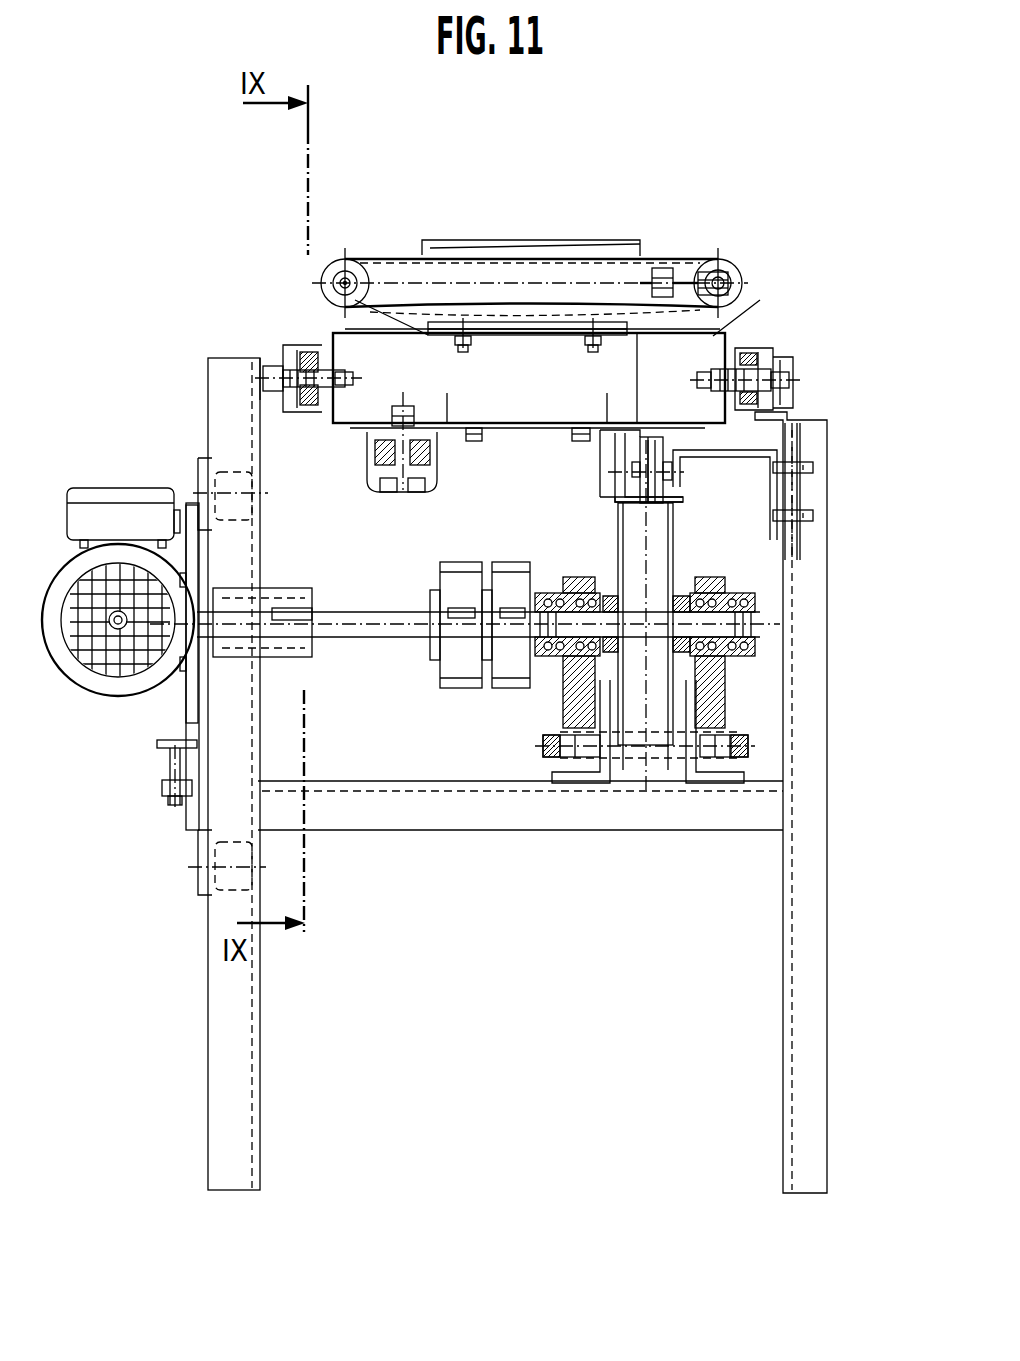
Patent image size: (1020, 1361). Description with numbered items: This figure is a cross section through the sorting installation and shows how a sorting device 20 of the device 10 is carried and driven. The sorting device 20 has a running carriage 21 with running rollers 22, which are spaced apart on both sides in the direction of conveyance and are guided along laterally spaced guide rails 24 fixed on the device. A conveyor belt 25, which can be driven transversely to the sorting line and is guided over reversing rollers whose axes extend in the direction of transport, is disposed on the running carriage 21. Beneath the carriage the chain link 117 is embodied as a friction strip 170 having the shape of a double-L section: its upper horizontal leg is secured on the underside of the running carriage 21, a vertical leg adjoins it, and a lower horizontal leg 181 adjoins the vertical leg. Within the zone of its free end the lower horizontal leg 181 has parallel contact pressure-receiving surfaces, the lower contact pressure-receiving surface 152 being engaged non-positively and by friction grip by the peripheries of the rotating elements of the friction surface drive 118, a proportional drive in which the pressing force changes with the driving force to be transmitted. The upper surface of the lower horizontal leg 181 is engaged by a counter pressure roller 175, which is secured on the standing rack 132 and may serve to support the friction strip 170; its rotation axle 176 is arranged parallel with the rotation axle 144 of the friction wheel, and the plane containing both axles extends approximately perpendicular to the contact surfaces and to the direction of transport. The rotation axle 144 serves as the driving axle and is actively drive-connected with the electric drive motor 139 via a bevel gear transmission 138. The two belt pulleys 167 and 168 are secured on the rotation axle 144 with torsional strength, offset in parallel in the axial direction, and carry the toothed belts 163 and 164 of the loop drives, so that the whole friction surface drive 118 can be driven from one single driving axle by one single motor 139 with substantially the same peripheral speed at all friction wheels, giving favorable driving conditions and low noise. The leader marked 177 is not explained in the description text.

The device 10 is at (555, 183).
The sorting device 20 is at (684, 236).
The running carriage 21 is at (345, 332).
The running roller 22 is at (300, 408).
The guide rail 24 is at (285, 345).
The conveyor belt 25 is at (393, 253).
The chain link 117 is at (583, 505).
The friction surface drive 118 is at (728, 531).
The standing rack 132 is at (808, 961).
The bevel gear transmission 138 is at (183, 690).
The electric drive motor 139 is at (63, 666).
The rotation axle 144 is at (372, 612).
The lower contact pressure-receiving surface 152 is at (620, 514).
The toothed belt 163 is at (508, 690).
The toothed belt 164 is at (455, 565).
The belt pulley 167 is at (450, 666).
The belt pulley 168 is at (500, 666).
The friction strip 170 is at (598, 468).
The counter pressure roller 175 is at (655, 445).
The rotation axle 176 is at (690, 480).
The bearing plate 177 is at (572, 487).
The lower horizontal leg 181 is at (662, 505).